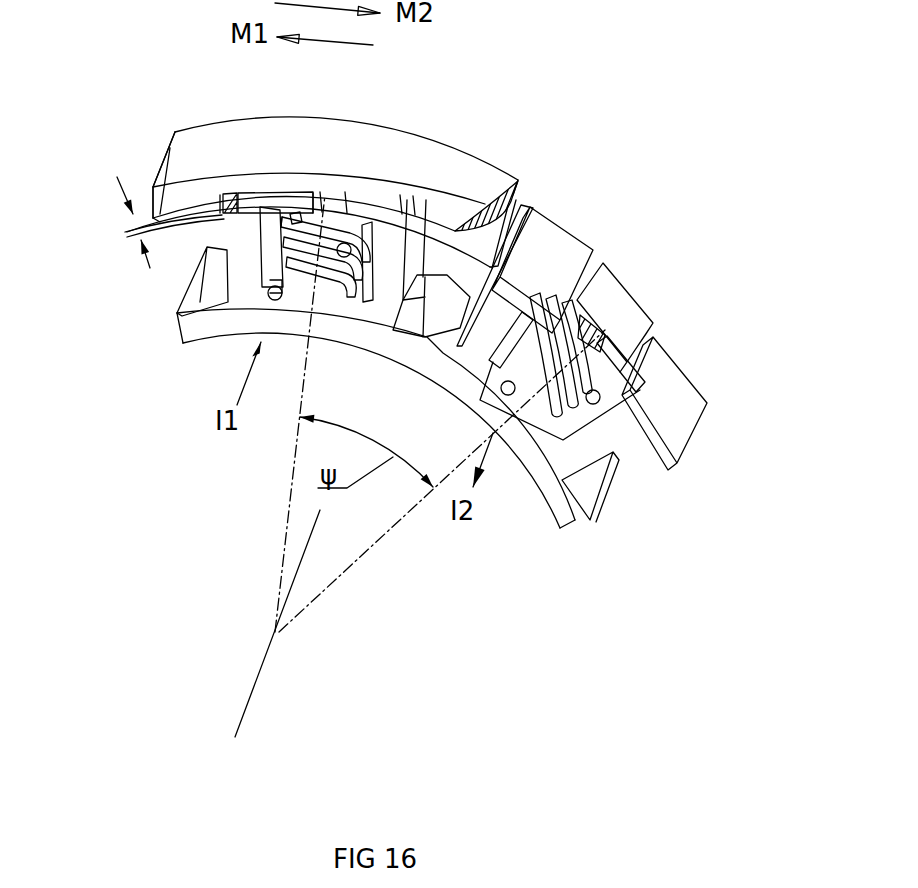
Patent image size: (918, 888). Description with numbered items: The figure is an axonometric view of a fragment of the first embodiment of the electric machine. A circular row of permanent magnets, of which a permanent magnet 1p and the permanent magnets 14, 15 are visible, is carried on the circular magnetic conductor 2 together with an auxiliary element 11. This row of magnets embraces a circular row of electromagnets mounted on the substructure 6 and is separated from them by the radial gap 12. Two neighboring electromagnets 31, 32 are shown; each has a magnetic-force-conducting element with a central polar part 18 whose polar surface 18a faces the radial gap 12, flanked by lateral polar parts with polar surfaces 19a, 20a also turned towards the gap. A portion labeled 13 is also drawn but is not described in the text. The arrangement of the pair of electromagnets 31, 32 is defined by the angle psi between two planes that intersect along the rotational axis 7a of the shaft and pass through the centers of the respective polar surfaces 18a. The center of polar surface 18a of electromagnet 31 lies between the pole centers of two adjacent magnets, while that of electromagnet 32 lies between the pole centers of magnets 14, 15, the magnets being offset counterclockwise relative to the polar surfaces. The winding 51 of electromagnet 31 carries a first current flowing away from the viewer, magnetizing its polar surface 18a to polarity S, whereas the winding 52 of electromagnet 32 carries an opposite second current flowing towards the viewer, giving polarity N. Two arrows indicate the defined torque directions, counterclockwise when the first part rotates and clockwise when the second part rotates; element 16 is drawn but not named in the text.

The circular magnetic conductor 2 is at (278, 140).
The permanent magnet 1p is at (157, 203).
The polar surface of lateral polar part 19a is at (232, 216).
The auxiliary element 11 is at (270, 200).
The radial gap 12 is at (117, 177).
The polar surface of lateral polar part 20a is at (466, 178).
The ring band 13 is at (457, 192).
The substructure 6 is at (193, 322).
The electromagnet 31 is at (217, 233).
The electromagnet 32 is at (630, 455).
The permanent magnet 14 is at (567, 265).
The permanent magnet 15 is at (610, 293).
The block 16 is at (663, 377).
The winding 51 is at (343, 287).
The winding 52 is at (540, 400).
The central polar part 18 is at (340, 215).
The polar surface 18a is at (318, 205).
The rotational axis 7a is at (260, 677).